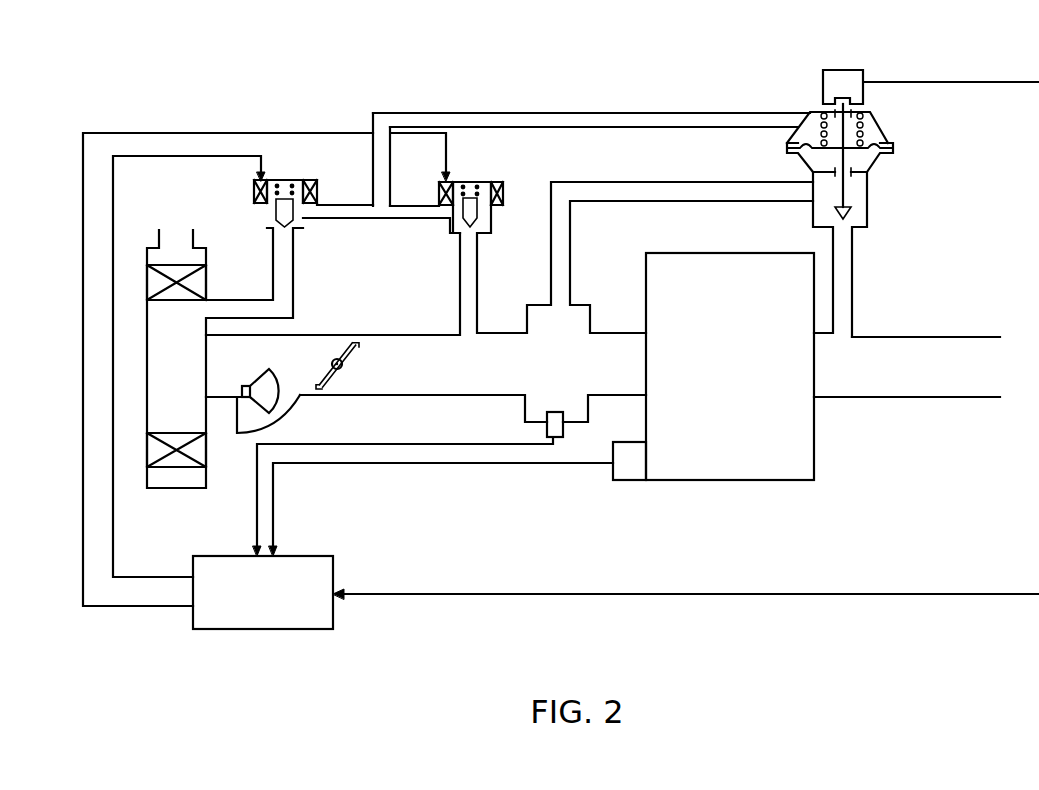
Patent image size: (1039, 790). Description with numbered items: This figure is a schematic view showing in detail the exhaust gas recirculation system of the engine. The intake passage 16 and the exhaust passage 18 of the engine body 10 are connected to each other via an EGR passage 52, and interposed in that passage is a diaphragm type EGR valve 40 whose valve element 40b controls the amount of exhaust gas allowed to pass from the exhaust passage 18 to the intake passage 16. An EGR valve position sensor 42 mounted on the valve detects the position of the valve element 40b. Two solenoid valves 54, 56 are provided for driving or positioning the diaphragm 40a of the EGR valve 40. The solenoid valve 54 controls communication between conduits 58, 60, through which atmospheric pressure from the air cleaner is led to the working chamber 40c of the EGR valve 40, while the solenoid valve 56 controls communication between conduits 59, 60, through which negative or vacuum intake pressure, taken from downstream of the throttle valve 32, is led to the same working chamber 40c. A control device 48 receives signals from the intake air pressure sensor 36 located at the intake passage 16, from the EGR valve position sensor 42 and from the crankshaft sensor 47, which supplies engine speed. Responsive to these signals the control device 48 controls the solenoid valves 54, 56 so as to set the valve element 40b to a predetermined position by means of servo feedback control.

The engine body 10 is at (815, 438).
The intake passage 16 is at (438, 381).
The exhaust passage 18 is at (943, 383).
The throttle valve 32 is at (346, 354).
The intake air pressure sensor 36 is at (547, 427).
The EGR valve 40 is at (913, 185).
The diaphragm 40a is at (847, 150).
The valve element 40b is at (852, 202).
The working chamber 40c is at (870, 130).
The EGR valve position sensor 42 is at (843, 75).
The crankshaft sensor 47 is at (628, 475).
The control device 48 is at (302, 555).
The EGR passage 52 is at (722, 203).
The solenoid valve 54 is at (283, 180).
The solenoid valve 56 is at (468, 182).
The conduit 58 is at (286, 299).
The conduit 59 is at (470, 273).
The conduit 60 is at (650, 112).